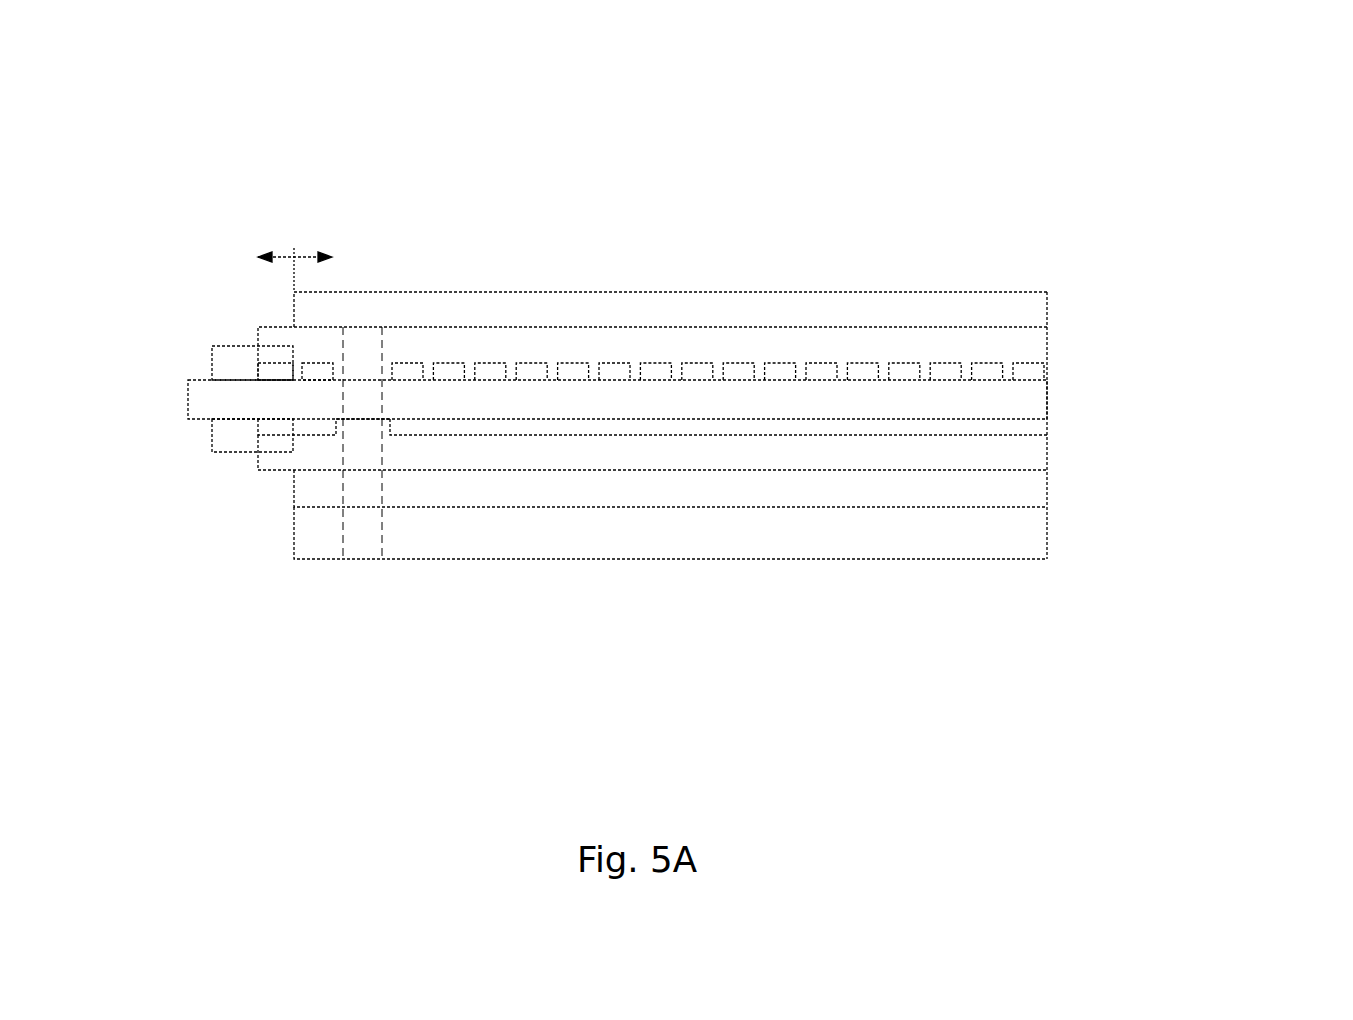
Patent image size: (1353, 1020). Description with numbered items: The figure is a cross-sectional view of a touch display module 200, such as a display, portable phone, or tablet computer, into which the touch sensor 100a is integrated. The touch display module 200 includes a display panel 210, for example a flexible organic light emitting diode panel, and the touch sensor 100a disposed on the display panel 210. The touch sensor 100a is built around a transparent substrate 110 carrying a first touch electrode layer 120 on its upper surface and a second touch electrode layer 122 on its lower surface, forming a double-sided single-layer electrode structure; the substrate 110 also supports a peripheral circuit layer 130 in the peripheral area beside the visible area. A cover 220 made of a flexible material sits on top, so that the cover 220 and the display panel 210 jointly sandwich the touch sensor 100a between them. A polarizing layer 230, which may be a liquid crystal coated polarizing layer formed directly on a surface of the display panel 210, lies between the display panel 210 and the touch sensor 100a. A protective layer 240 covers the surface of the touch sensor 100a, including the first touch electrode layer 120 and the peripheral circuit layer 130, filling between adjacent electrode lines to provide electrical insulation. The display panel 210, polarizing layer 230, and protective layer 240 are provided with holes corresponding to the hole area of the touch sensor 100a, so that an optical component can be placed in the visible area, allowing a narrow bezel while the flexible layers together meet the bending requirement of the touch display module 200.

The touch display module 200 is at (155, 90).
The cover 220 is at (1039, 309).
The protective layer 240 is at (1039, 338).
The first touch electrode layer 120 is at (1035, 370).
The substrate 110 is at (1033, 396).
The second touch electrode layer 122 is at (1035, 425).
The touch sensor 100a is at (743, 394).
The peripheral circuit layer 130 is at (229, 438).
The polarizing layer 230 is at (1039, 487).
The display panel 210 is at (1039, 532).